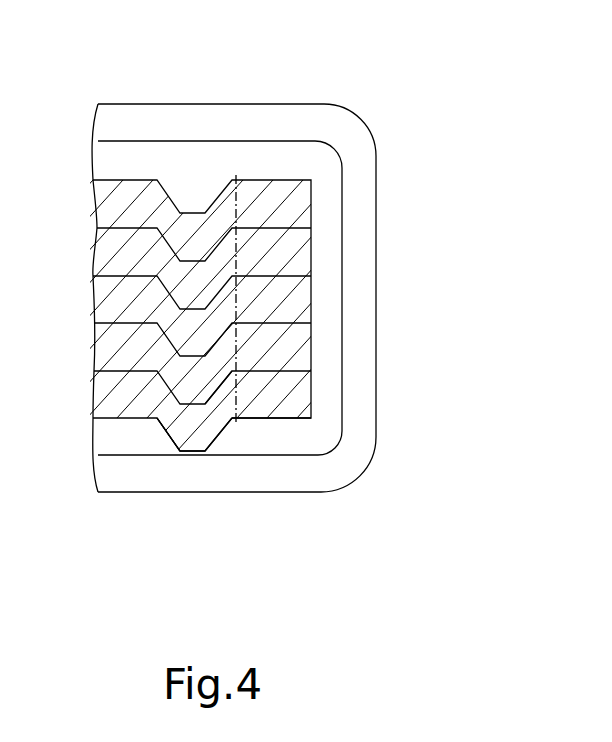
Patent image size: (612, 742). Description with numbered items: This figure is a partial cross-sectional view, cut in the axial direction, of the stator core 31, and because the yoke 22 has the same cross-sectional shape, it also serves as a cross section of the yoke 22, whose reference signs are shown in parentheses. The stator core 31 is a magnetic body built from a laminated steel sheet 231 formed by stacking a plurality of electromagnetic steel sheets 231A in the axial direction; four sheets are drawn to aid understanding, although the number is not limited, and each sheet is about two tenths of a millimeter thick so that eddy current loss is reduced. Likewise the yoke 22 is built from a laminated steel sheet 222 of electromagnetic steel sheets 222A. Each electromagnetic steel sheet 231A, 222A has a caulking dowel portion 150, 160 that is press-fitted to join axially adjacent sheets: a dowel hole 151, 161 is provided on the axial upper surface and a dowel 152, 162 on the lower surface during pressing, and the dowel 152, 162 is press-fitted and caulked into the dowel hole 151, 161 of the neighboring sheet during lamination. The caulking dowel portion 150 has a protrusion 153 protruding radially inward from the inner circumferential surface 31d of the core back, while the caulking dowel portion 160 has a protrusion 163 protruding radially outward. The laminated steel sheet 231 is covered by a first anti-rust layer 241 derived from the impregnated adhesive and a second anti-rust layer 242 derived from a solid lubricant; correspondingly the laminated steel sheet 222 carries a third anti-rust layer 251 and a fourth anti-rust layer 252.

The stator core 31 is at (286, 317).
The yoke 22 is at (286, 317).
The inner circumferential surface 31d is at (238, 207).
The second anti-rust layer 242 is at (315, 298).
The fourth anti-rust layer 252 is at (376, 215).
The first anti-rust layer 241 is at (294, 298).
The third anti-rust layer 251 is at (330, 282).
The laminated steel sheet 231 is at (286, 315).
The laminated steel sheet 222 is at (286, 315).
The electromagnetic steel sheet 231A is at (306, 316).
The electromagnetic steel sheet 222A is at (303, 392).
The caulking dowel portion 150 is at (194, 508).
The caulking dowel portion 160 is at (216, 437).
The dowel hole 151 is at (240, 467).
The dowel hole 161 is at (210, 391).
The dowel 152 is at (146, 494).
The dowel 162 is at (158, 445).
The protrusion 153 is at (285, 488).
The protrusion 163 is at (283, 418).